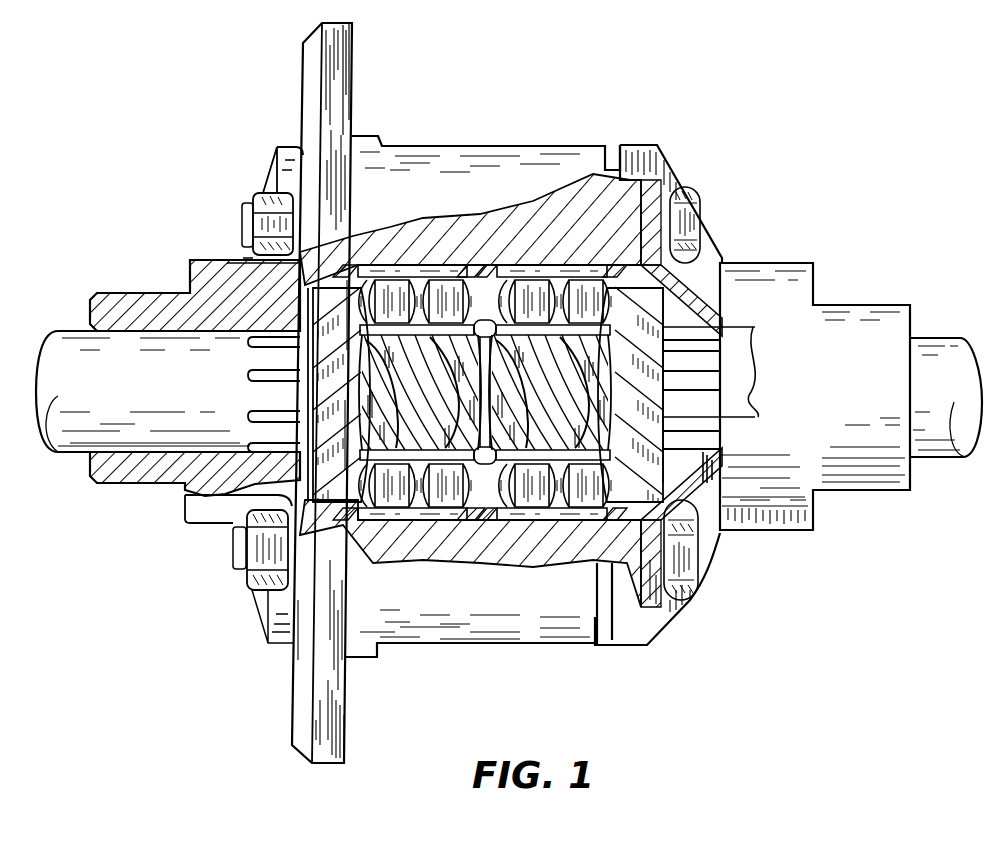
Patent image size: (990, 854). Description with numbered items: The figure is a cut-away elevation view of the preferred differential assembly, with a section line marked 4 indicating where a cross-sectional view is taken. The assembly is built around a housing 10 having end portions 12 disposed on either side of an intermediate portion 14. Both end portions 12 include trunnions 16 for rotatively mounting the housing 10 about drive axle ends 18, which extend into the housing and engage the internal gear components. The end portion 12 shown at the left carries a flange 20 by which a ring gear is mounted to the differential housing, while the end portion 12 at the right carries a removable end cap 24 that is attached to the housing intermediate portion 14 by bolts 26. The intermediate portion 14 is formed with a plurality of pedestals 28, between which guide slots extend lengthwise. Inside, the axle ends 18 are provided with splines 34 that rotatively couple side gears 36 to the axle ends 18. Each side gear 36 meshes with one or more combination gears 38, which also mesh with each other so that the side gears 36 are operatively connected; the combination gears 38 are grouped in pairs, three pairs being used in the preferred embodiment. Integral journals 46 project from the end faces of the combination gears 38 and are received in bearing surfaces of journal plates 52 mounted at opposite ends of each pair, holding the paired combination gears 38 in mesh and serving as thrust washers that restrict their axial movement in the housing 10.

The housing 10 is at (266, 156).
The end portions 12 is at (137, 490).
The intermediate portion 14 is at (520, 650).
The trunnions 16 is at (140, 292).
The drive axle ends 18 is at (102, 392).
The flange 20 is at (318, 696).
The removable end cap 24 is at (642, 148).
The bolts 26 is at (693, 217).
The pedestals 28 is at (612, 226).
The splines 34 is at (258, 380).
The side gears 36 is at (352, 431).
The combination gears 38 is at (426, 404).
The journals 46 is at (452, 265).
The journal plates 52 is at (398, 262).
The section line 4- 4 is at (425, 215).